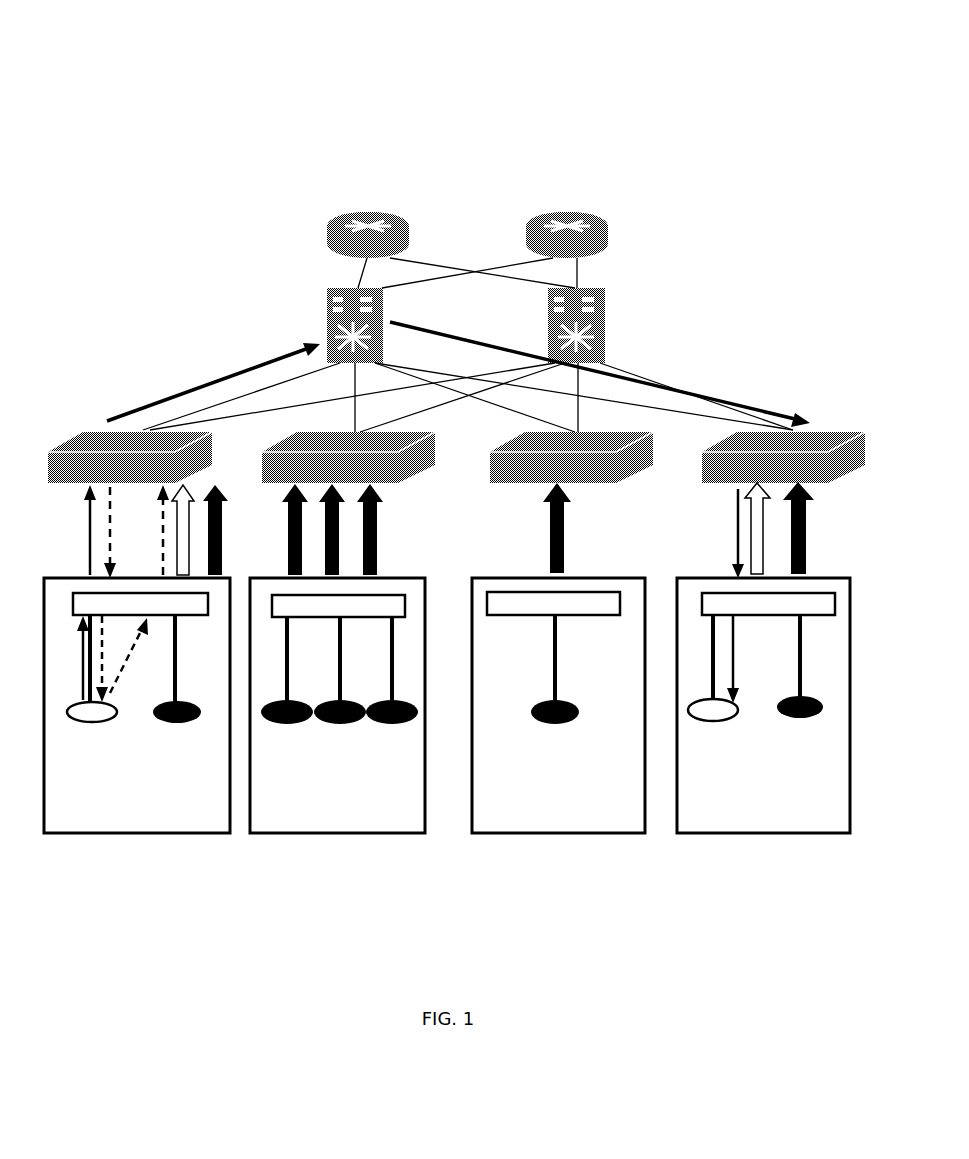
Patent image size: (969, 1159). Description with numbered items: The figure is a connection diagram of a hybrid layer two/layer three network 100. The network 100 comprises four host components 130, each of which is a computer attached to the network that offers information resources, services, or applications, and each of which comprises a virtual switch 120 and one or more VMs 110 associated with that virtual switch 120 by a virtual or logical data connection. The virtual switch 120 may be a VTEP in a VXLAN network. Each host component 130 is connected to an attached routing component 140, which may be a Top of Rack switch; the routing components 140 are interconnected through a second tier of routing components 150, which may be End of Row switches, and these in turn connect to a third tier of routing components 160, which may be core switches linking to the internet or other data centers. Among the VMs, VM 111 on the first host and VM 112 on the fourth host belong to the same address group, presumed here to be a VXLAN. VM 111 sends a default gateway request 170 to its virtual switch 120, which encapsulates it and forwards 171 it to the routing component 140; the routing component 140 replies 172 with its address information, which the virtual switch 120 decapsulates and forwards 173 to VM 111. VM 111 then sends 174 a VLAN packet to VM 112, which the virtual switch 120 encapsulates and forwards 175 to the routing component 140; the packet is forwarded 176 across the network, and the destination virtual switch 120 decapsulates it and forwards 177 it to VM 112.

The hybrid layer 2/layer 3 network 100 is at (158, 108).
The VM 110 is at (173, 723).
The VM 111 is at (83, 725).
The VM 112 is at (720, 720).
The virtual switch 120 is at (199, 615).
The host component 130 is at (128, 835).
The routing component 140 is at (85, 432).
The second tier routing component 150 is at (327, 288).
The third tier routing component 160 is at (530, 220).
The default gateway request 170 is at (137, 640).
The forward 171 is at (162, 520).
The reply 172 is at (115, 525).
The forward 173 is at (107, 655).
The send 174 is at (83, 628).
The forward 175 is at (88, 555).
The forward 176 is at (205, 384).
The forward 177 is at (735, 673).